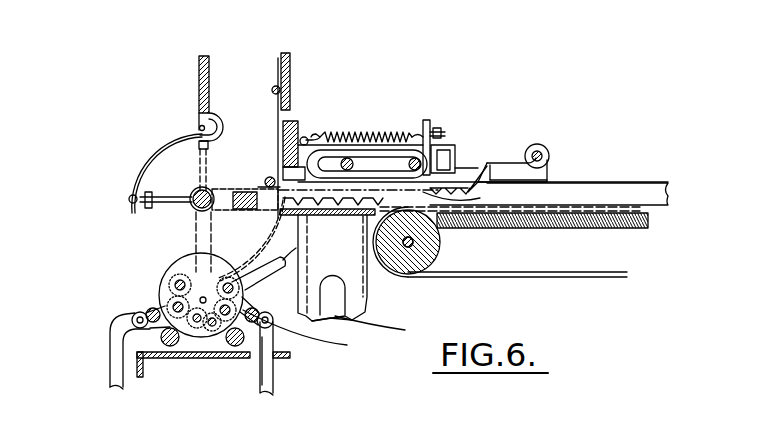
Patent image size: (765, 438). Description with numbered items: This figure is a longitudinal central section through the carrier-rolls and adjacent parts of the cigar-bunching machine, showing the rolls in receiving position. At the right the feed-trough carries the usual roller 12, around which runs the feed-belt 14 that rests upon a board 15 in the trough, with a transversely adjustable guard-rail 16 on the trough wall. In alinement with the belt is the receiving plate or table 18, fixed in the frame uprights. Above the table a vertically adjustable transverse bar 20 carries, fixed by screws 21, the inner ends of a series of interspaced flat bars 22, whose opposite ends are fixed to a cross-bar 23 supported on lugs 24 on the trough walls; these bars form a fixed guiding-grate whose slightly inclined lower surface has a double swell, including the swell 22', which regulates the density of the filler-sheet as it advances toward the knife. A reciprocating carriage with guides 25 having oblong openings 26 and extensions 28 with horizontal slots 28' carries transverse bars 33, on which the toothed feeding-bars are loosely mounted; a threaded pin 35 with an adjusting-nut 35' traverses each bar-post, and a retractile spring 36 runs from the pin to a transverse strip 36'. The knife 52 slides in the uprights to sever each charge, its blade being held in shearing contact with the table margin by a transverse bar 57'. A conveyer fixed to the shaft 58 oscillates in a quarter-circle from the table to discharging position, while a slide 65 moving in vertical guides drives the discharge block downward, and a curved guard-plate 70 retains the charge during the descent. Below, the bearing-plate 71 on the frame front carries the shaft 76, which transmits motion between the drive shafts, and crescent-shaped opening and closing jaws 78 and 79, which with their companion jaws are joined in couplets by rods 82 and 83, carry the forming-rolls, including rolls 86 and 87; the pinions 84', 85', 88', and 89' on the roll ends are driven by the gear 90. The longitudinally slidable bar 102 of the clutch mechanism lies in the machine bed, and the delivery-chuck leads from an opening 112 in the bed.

The roller 12 is at (442, 250).
The feed-belt 14 is at (570, 276).
The board 15 is at (628, 230).
The guard-rail 16 is at (609, 193).
The receiving plate or table 18 is at (332, 268).
The transverse bar 20 is at (292, 124).
The screws 21 is at (312, 136).
The flat bars 22 is at (532, 128).
The swell 22' is at (523, 130).
The cross-bar 23 is at (542, 152).
The lugs 24 is at (548, 177).
The guides 25 is at (357, 285).
The oblong openings 26 is at (335, 283).
The extensions or guides 28 is at (431, 188).
The horizontal slots 28' is at (509, 104).
The transverse bars 33 is at (350, 160).
The threaded pin 35 is at (446, 101).
The adjusting-nut 35' is at (458, 122).
The retractile spring 36 is at (373, 106).
The transverse strip 36' is at (346, 106).
The knife 52 is at (281, 58).
The transverse bar 57' is at (246, 181).
The shaft 58 is at (190, 204).
The slide 65 is at (200, 63).
The curved guard-plate 70 is at (292, 250).
The bearing-plate 71 is at (182, 257).
The shaft 76 is at (238, 360).
The jaw 78 is at (167, 293).
The jaw 79 is at (232, 292).
The rod 82 is at (152, 318).
The rod 83 is at (312, 335).
The pinion 84' is at (159, 268).
The pinion 85' is at (124, 295).
The forming-roll 86 is at (189, 358).
The forming-roll 87 is at (259, 271).
The pinion 88' is at (244, 337).
The pinion 89' is at (215, 339).
The gear 90 is at (214, 258).
The longitudinally-slidable bar 102 is at (171, 347).
The opening 112 is at (198, 333).